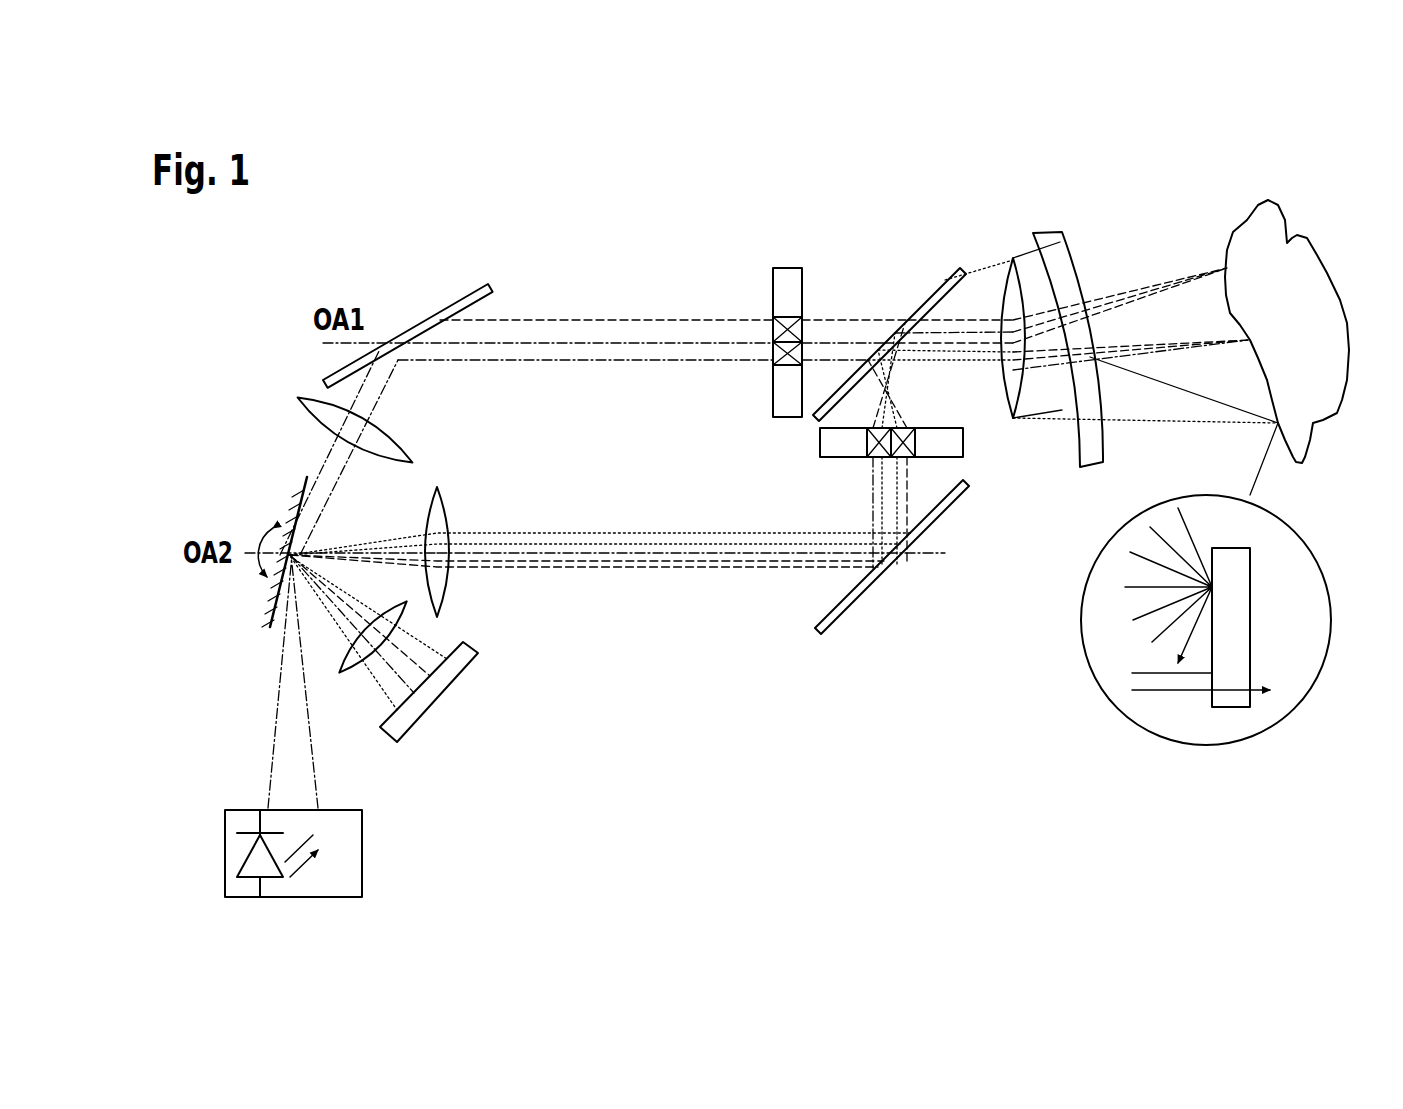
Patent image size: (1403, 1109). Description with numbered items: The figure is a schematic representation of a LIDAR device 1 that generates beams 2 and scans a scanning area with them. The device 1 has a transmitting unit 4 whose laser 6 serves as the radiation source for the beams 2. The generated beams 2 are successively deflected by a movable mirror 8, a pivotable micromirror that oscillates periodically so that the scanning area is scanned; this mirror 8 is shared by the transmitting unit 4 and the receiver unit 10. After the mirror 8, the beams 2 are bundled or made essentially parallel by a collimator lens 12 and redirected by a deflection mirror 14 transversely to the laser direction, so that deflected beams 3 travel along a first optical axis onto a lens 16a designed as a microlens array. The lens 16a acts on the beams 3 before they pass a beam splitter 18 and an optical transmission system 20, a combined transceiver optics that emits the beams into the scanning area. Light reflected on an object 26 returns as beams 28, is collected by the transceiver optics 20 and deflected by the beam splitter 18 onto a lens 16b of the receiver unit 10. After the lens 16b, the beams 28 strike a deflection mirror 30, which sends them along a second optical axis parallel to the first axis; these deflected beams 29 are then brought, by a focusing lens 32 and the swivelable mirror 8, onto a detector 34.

The LIDAR device 1 is at (322, 229).
The beams 2 is at (287, 765).
The deflected beams 3 is at (578, 340).
The transmitting unit 4 is at (258, 323).
The laser 6 is at (225, 853).
The movable mirror 8 is at (275, 598).
The receiver unit 10 is at (888, 608).
The collimator lens 12 is at (325, 415).
The deflection mirror 14 is at (453, 303).
The lens 16a is at (787, 283).
The lens 16b is at (980, 480).
The beam splitter 18 is at (942, 280).
The optical transmission system 20 is at (1088, 208).
The object 26 is at (1305, 323).
The reflected beams 28 is at (913, 397).
The deflected beams 29 is at (697, 570).
The deflection mirror 30 is at (833, 620).
The focusing lens 32 is at (440, 588).
The detector 34 is at (443, 680).